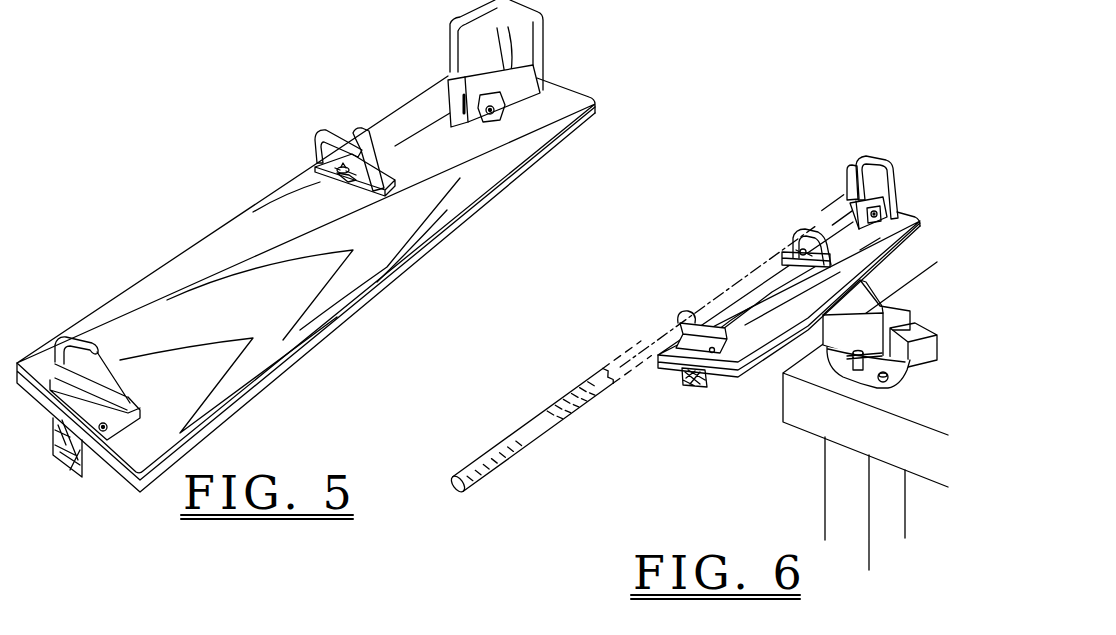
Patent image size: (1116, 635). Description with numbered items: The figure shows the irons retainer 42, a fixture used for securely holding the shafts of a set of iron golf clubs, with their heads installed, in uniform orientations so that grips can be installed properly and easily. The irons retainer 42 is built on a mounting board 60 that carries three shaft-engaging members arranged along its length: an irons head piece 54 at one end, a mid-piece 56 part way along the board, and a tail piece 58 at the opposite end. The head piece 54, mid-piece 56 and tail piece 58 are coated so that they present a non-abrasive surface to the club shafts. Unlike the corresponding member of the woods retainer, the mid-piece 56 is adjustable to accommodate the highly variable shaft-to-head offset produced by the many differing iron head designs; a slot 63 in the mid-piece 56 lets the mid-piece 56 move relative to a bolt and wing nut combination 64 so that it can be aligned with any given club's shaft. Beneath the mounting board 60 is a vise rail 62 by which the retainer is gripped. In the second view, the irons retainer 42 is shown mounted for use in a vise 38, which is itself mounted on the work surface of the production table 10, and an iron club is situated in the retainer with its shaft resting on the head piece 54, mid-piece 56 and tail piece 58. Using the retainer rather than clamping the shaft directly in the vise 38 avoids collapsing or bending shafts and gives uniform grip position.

In FIG. 6, the production table 10 is at (805, 423).
In FIG. 6, the vise 38 is at (897, 305).
In FIG. 5, the irons retainer 42 is at (240, 177).
In FIG. 6, the irons retainer 42 is at (913, 200).
In FIG. 5, the irons head piece 54 is at (543, 37).
In FIG. 6, the irons head piece 54 is at (849, 169).
In FIG. 5, the mid-piece 56 is at (351, 165).
In FIG. 6, the mid-piece 56 is at (790, 243).
In FIG. 5, the tail piece 58 is at (128, 404).
In FIG. 6, the tail piece 58 is at (680, 318).
In FIG. 5, the mounting board 60 is at (281, 279).
In FIG. 6, the mounting board 60 is at (880, 240).
In FIG. 5, the vise rail 62 is at (65, 467).
In FIG. 6, the vise rail 62 is at (698, 393).
In FIG. 5, the slot 63 is at (352, 181).
In FIG. 5, the bolt and wing nut combination 64 is at (337, 178).